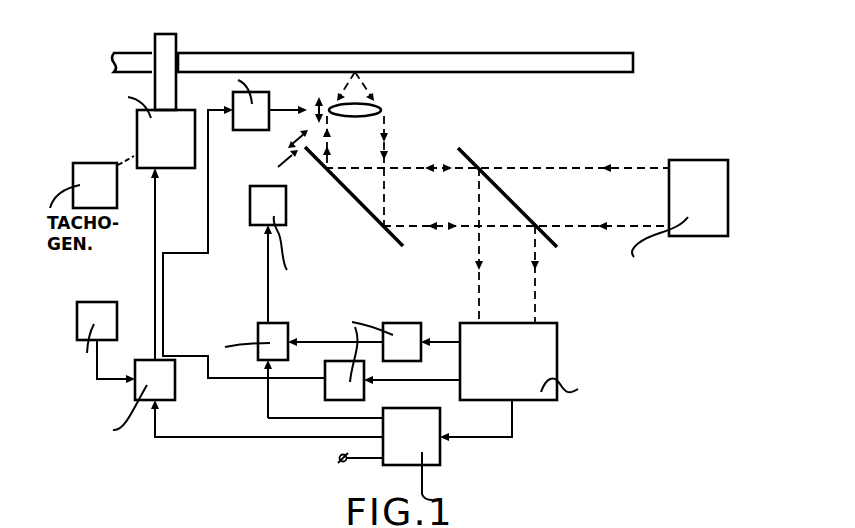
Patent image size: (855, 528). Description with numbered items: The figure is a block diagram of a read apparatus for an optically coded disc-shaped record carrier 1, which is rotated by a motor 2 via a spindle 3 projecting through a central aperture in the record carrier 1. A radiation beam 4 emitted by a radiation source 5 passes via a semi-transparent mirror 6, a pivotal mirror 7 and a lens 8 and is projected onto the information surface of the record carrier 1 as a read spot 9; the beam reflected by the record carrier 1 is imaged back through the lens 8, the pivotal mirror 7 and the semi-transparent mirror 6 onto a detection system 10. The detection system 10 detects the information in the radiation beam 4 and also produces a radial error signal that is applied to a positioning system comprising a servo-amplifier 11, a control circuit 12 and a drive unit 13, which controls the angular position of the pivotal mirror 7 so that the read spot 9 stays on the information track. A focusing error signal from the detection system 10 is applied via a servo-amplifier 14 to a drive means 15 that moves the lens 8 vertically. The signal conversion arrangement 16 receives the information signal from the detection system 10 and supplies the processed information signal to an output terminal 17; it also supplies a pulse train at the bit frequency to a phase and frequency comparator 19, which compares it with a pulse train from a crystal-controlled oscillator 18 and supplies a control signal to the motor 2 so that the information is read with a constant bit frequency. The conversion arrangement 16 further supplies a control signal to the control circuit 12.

The record carrier 1 is at (452, 53).
The motor 2 is at (136, 140).
The spindle 3 is at (165, 33).
The radiation beam 4 is at (573, 166).
The radiation source 5 is at (703, 160).
The semi-transparent mirror 6 is at (469, 163).
The pivotal mirror 7 is at (340, 196).
The lens 8 is at (372, 117).
The read spot 9 is at (355, 72).
The detection system 10 is at (557, 348).
The servo-amplifier 11 is at (403, 323).
The control circuit 12 is at (259, 322).
The drive unit 13 is at (340, 234).
The servo-amplifier 14 is at (337, 400).
The drive 15 is at (257, 133).
The signal conversion arrangement 16 is at (443, 450).
The output terminal 17 is at (338, 457).
The crystal-controlled oscillator 18 is at (104, 301).
The phase and frequency comparator 19 is at (176, 377).